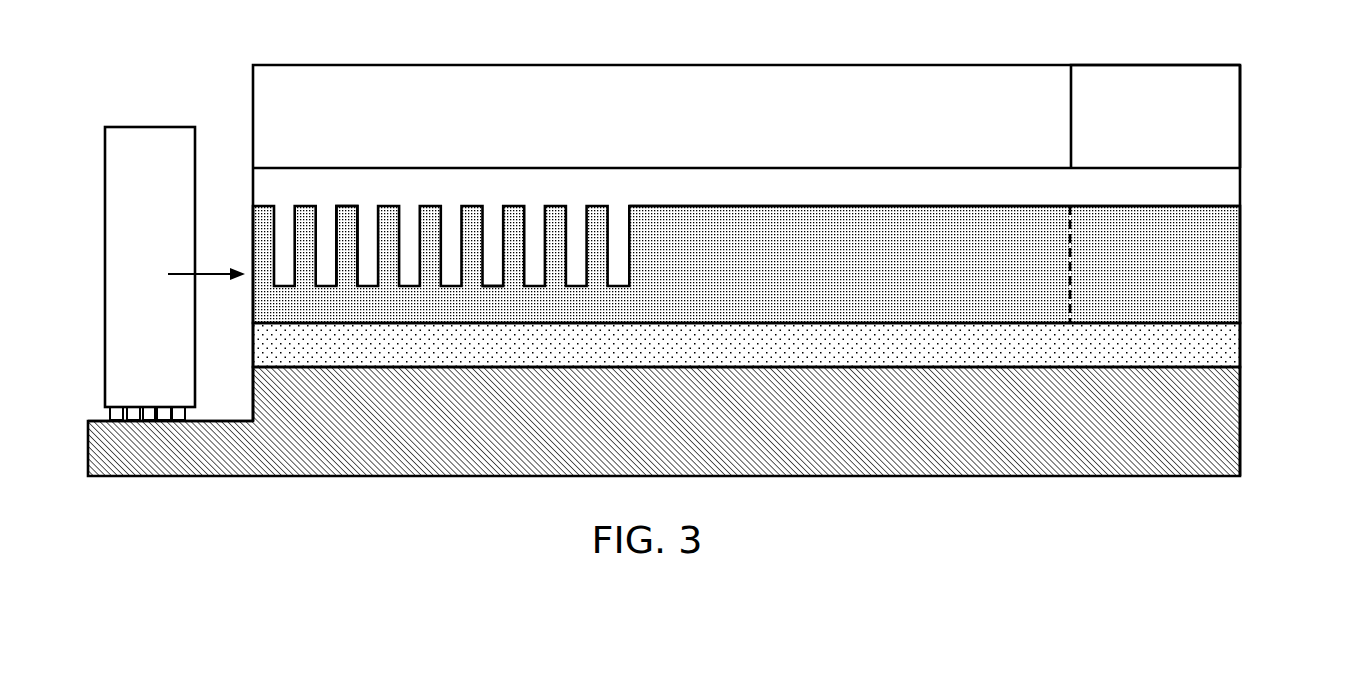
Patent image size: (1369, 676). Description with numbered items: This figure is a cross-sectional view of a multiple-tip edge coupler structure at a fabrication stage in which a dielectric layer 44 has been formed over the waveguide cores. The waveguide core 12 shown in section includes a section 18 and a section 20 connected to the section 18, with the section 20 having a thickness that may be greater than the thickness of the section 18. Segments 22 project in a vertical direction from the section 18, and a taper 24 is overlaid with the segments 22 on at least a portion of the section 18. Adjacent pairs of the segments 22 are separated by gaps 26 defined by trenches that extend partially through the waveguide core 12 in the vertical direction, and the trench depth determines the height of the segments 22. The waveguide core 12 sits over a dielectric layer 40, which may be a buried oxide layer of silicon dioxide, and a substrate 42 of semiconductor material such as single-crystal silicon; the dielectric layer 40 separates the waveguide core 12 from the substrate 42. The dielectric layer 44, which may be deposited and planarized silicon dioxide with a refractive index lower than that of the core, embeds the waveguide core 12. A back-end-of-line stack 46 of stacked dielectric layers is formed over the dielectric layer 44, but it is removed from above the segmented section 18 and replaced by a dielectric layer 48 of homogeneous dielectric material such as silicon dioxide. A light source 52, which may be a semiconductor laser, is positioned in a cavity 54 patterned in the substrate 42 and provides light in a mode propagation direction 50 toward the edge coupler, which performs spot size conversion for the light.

The waveguide core 12 is at (1193, 162).
The section 18 is at (560, 310).
The section 20 is at (1170, 240).
The segments 22 is at (383, 218).
The taper 24 is at (862, 252).
The gaps 26 is at (501, 163).
The dielectric layer 40 is at (1200, 348).
The substrate 42 is at (1205, 428).
The dielectric layer 44 is at (1190, 195).
The back-end-of-line stack 46 is at (1190, 93).
The dielectric layer 48 is at (297, 87).
The mode propagation direction 50 is at (218, 270).
The light source 52 is at (136, 192).
The cavity 54 is at (212, 393).